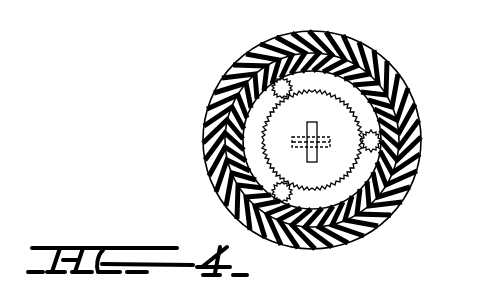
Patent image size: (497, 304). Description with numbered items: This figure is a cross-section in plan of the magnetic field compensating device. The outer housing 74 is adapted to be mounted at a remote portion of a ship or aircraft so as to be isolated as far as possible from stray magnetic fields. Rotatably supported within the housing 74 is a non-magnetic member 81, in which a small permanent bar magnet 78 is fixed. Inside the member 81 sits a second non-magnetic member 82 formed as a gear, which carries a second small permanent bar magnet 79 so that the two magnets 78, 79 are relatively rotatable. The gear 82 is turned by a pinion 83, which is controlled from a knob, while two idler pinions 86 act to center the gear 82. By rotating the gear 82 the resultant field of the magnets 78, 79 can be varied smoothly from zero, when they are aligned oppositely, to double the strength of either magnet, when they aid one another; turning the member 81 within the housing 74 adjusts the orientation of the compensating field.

The housing 74 is at (376, 53).
The non-magnetic member 81 is at (382, 88).
The non-magnetic member formed as a gear 82 is at (270, 133).
The pinions 86 is at (290, 89).
The pinion 83 is at (362, 149).
The permanent bar magnet 79 is at (316, 130).
The permanent bar magnet 78 is at (297, 147).